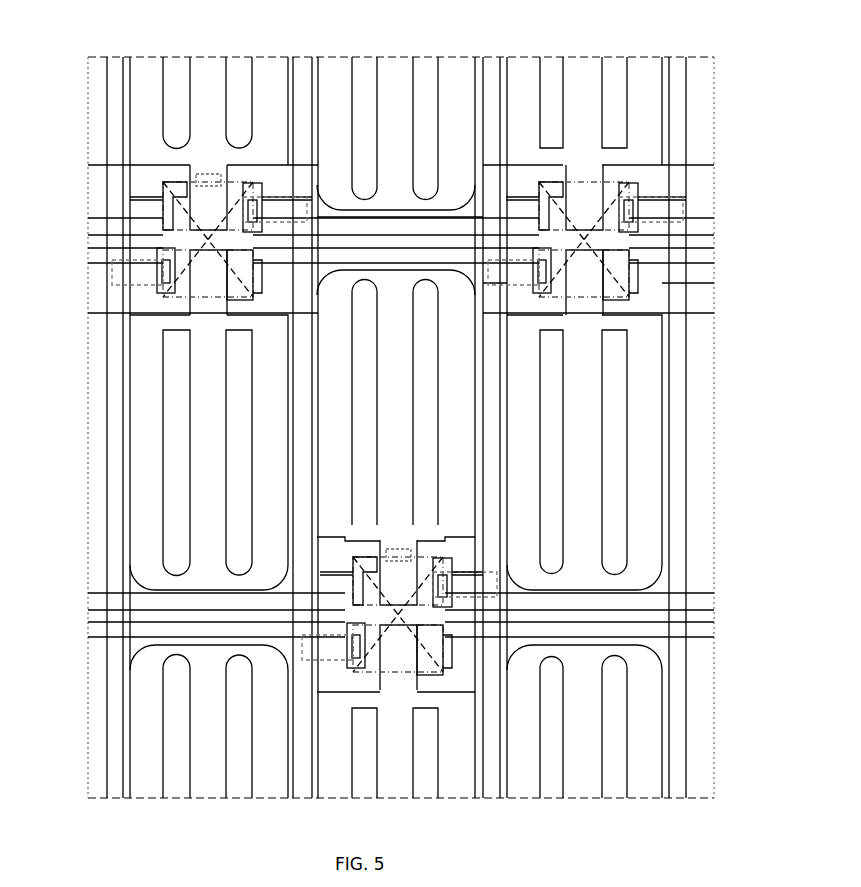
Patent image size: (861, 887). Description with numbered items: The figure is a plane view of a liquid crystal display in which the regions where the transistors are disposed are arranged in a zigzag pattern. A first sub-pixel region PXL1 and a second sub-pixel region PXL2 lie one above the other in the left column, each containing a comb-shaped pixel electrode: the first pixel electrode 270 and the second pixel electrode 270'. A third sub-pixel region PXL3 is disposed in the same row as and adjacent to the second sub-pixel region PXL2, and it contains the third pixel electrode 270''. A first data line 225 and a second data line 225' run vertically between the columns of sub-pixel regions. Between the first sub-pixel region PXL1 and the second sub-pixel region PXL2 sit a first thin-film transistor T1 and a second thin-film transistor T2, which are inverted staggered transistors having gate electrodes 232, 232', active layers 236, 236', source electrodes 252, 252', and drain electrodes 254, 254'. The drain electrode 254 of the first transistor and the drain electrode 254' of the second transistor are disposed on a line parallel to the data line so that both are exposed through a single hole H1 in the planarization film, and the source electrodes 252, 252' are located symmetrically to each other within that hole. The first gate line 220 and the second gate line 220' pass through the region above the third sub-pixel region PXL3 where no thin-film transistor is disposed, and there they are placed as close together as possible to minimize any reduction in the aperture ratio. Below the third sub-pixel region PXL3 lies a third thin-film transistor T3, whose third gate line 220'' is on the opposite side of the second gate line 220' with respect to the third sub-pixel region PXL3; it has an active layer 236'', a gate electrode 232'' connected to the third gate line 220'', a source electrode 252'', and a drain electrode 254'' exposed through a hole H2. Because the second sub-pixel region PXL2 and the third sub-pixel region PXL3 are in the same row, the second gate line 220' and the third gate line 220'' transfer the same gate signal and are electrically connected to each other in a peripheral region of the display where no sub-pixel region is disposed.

The first gate line 220 is at (372, 194).
The second gate line 220' is at (372, 281).
The third gate line 220'' is at (372, 572).
The first data line 225 is at (76, 427).
The second data line 225' is at (171, 427).
The gate electrode 232 is at (270, 125).
The gate electrode 232' is at (146, 298).
The gate electrode 232'' is at (609, 550).
The active layer 236 is at (295, 120).
The active layer 236' is at (96, 262).
The active layer 236'' is at (609, 577).
The source electrode 252 is at (277, 124).
The source electrode 252' is at (141, 286).
The source electrode 252'' is at (569, 566).
The drain electrode 254 is at (108, 185).
The drain electrode 254' is at (102, 252).
The drain electrode 254'' is at (203, 555).
The first pixel electrode 270 is at (159, 93).
The second pixel electrode 270' is at (159, 452).
The third pixel electrode 270'' is at (551, 405).
The first sub-pixel region PXL1 is at (205, 70).
The second sub-pixel region PXL2 is at (207, 545).
The third sub-pixel region PXL3 is at (388, 327).
The hole H1 is at (197, 178).
The hole H2 is at (390, 556).
The first thin-film transistor T1 is at (207, 170).
The second thin-film transistor T2 is at (207, 312).
The third thin-film transistor T3 is at (395, 546).